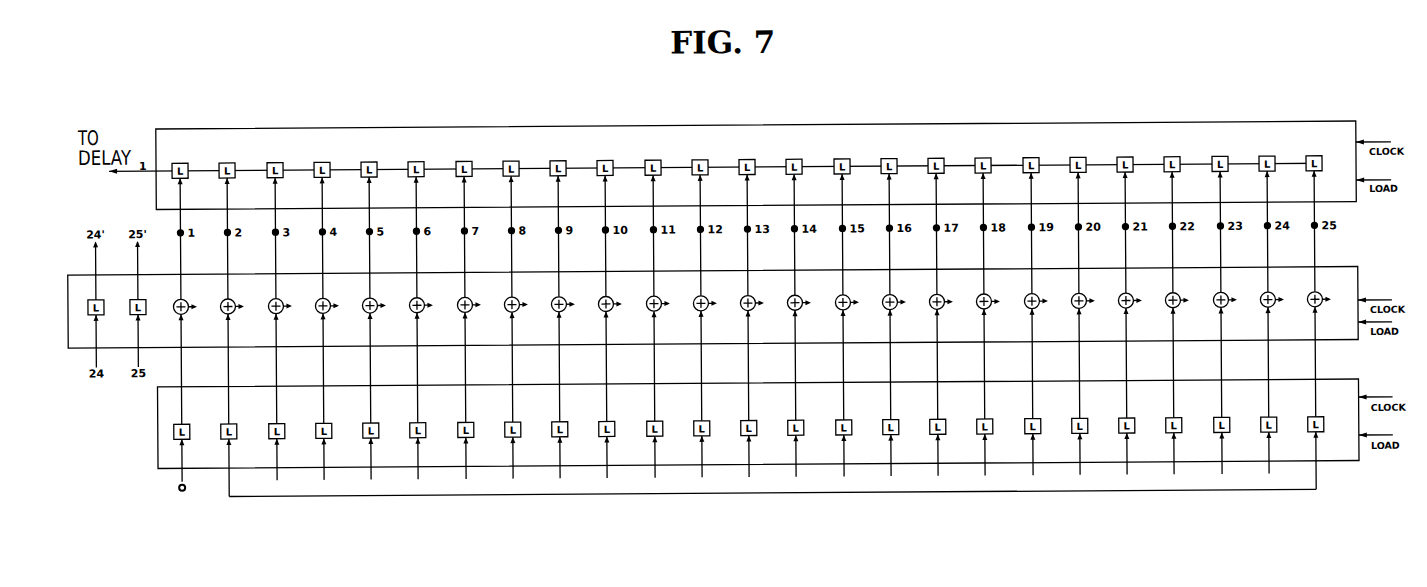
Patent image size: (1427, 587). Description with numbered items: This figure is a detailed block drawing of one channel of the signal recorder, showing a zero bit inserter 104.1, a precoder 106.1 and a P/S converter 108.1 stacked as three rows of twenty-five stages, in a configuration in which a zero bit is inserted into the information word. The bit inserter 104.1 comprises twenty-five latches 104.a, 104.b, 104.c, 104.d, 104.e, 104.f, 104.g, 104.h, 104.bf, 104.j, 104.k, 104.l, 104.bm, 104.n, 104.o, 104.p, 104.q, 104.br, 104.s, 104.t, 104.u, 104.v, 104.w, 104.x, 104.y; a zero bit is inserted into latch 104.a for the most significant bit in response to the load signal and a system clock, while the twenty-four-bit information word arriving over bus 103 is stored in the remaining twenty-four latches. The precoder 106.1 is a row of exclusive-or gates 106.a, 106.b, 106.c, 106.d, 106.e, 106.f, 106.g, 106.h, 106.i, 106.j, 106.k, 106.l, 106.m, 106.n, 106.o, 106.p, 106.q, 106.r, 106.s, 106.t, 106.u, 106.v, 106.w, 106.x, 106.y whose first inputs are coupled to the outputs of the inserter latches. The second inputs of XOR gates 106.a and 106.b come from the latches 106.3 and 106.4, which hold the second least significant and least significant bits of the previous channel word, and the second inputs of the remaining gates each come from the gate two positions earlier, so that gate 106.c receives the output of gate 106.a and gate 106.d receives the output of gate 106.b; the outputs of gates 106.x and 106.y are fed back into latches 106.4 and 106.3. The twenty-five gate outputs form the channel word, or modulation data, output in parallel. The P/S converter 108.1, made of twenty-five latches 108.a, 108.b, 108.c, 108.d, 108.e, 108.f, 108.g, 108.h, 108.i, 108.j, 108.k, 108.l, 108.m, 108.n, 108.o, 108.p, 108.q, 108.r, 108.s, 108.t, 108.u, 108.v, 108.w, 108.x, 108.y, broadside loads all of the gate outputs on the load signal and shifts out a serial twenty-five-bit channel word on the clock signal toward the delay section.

The P/S converter 108.1 is at (157, 200).
The precoder 106.1 is at (82, 344).
The "0" bit inserter 104.1 is at (157, 436).
The bus 103 is at (603, 493).
The latch 106.3 is at (152, 303).
The latch 106.4 is at (110, 303).
The latch 108.a is at (177, 162).
The latch 108.b is at (223, 162).
The latch 108.c is at (272, 162).
The latch 108.d is at (318, 161).
The latch 108.e is at (366, 161).
The latch 108.f is at (413, 161).
The latch 108.g is at (460, 160).
The latch 108.h is at (507, 160).
The latch 108.i is at (554, 160).
The latch 108.j is at (601, 159).
The latch 108.k is at (650, 159).
The latch 108.l is at (696, 159).
The latch 108.m is at (744, 158).
The latch 108.n is at (790, 158).
The latch 108.o is at (839, 158).
The latch 108.p is at (885, 158).
The latch 108.q is at (932, 157).
The latch 108.r is at (980, 157).
The latch 108.s is at (1028, 157).
The latch 108.t is at (1075, 156).
The latch 108.u is at (1121, 156).
The latch 108.v is at (1169, 156).
The latch 108.w is at (1217, 155).
The latch 108.x is at (1264, 155).
The latch 108.y is at (1311, 155).
The exclusive-or gate 106.a is at (196, 304).
The exclusive-or gate 106.b is at (244, 303).
The exclusive-or gate 106.c is at (291, 303).
The exclusive-or gate 106.d is at (339, 303).
The exclusive-or gate 106.e is at (385, 302).
The exclusive-or gate 106.f is at (431, 302).
The exclusive-or gate 106.g is at (481, 302).
The exclusive-or gate 106.h is at (528, 301).
The exclusive-or gate 106.i is at (573, 301).
The exclusive-or gate 106.j is at (620, 301).
The exclusive-or gate 106.k is at (670, 300).
The exclusive-or gate 106.l is at (715, 300).
The exclusive-or gate 106.m is at (765, 300).
The exclusive-or gate 106.n is at (811, 299).
The exclusive-or gate 106.o is at (859, 299).
The exclusive-or gate 106.p is at (906, 299).
The exclusive-or gate 106.q is at (953, 299).
The exclusive-or gate 106.r is at (999, 298).
The exclusive-or gate 106.s is at (1047, 298).
The exclusive-or gate 106.t is at (1093, 298).
The exclusive-or gate 106.u is at (1142, 297).
The exclusive-or gate 106.v is at (1189, 297).
The exclusive-or gate 106.w is at (1238, 297).
The exclusive-or gate 106.x is at (1283, 296).
The exclusive-or gate 106.y is at (1330, 296).
The latch 104.a is at (198, 425).
The latch 104.b is at (245, 424).
The latch 104.c is at (293, 424).
The latch 104.d is at (340, 424).
The latch 104.e is at (387, 423).
The latch 104.f is at (433, 423).
The latch 104.g is at (482, 423).
The latch 104.h is at (529, 422).
The latch 104.bf is at (579, 422).
The latch 104.j is at (621, 422).
The latch 104.k is at (671, 421).
The latch 104.l is at (716, 421).
The latch 104.bm is at (771, 421).
The latch 104.n is at (812, 420).
The latch 104.o is at (860, 420).
The latch 104.p is at (907, 420).
The latch 104.q is at (954, 420).
The latch 104.br is at (1004, 419).
The latch 104.s is at (1049, 419).
The latch 104.t is at (1095, 419).
The latch 104.u is at (1143, 418).
The latch 104.v is at (1190, 418).
The latch 104.w is at (1240, 418).
The latch 104.x is at (1285, 417).
The latch 104.y is at (1332, 417).